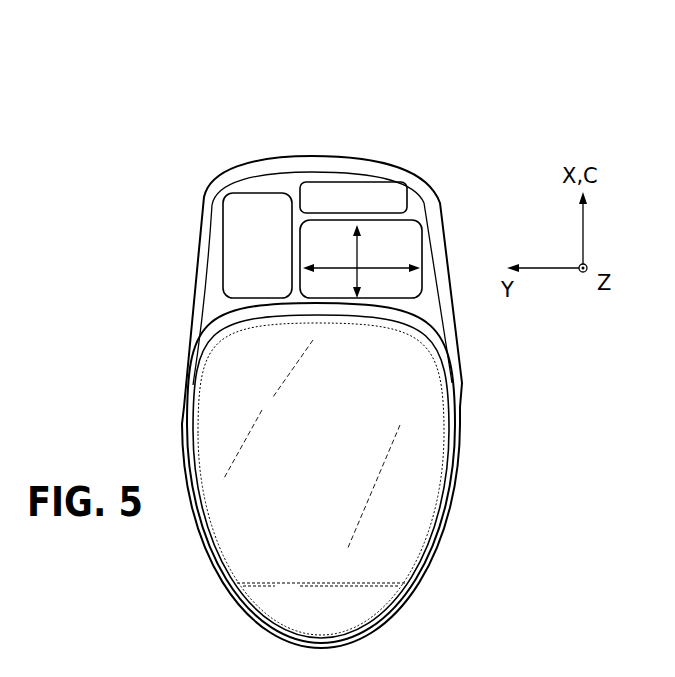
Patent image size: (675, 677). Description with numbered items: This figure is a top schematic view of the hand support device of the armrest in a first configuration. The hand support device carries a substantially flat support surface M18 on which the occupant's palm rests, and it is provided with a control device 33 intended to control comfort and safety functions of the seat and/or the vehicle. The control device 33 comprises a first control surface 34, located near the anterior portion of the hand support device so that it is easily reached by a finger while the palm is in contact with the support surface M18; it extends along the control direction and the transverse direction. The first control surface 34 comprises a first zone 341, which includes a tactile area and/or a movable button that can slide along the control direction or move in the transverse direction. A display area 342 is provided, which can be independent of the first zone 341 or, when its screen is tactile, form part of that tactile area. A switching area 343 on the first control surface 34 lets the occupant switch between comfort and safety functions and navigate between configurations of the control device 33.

The control device 33 is at (176, 191).
The first control surface 34 is at (427, 73).
The first zone 341 is at (372, 242).
The display area 342 is at (268, 212).
The switching area 343 is at (330, 197).
The support surface M18 is at (413, 465).